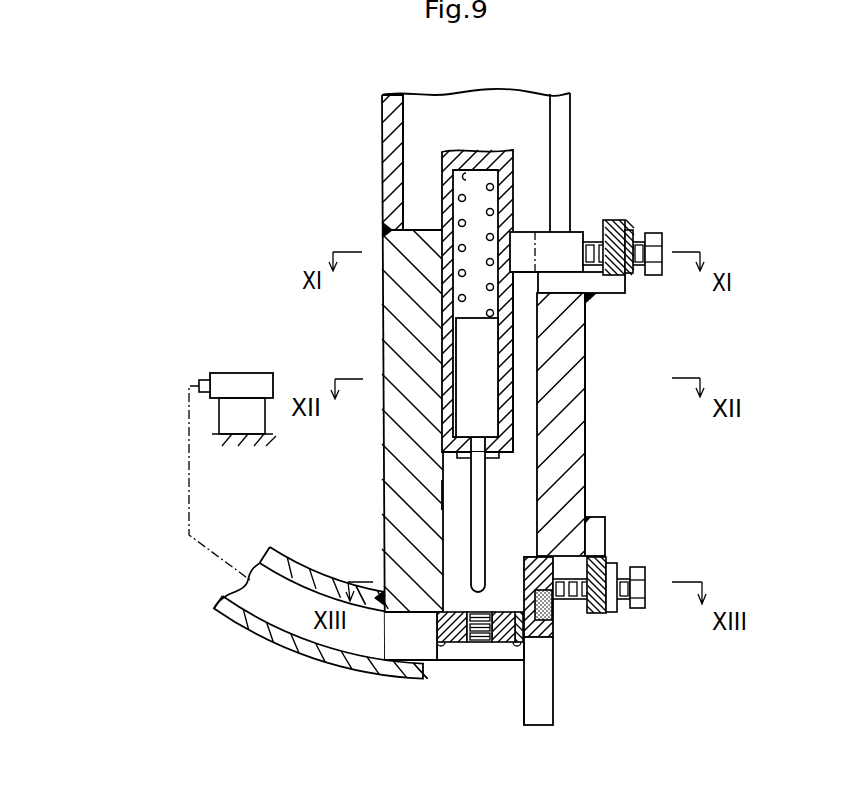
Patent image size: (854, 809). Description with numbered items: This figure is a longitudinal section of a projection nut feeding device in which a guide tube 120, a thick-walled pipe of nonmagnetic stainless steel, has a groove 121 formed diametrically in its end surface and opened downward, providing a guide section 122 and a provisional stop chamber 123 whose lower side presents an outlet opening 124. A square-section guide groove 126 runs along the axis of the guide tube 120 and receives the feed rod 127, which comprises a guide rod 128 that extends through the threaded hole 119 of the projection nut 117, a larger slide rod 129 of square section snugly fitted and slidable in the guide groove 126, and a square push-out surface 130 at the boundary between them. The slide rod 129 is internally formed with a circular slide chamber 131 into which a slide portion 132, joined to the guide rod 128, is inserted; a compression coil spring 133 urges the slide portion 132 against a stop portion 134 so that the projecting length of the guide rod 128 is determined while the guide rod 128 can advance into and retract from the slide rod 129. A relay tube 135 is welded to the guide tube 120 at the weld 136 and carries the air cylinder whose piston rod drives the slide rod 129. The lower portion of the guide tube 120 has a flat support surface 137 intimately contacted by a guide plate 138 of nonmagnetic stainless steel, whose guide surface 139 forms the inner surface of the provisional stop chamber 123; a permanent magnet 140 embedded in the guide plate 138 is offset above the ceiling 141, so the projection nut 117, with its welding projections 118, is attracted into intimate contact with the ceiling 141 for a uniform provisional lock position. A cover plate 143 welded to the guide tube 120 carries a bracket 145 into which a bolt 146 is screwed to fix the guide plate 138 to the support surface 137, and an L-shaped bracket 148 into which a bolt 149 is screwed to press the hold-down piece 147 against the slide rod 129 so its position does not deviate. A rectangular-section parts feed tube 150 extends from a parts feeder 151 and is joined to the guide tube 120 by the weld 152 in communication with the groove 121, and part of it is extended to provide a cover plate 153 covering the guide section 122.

The projection nut 117 is at (448, 645).
The welding projections 118 is at (439, 644).
The threaded hole 119 is at (472, 643).
The guide tube 120 is at (383, 509).
The groove 121 is at (393, 644).
The guide section 122 is at (381, 590).
The provisional stop chamber 123 is at (496, 650).
The outlet opening 124 is at (512, 652).
The guide groove 126 is at (446, 503).
The feed rod 127 is at (514, 357).
The guide rod 128 is at (488, 517).
The slide rod 129 is at (535, 387).
The push-out surface 130 is at (452, 468).
The slide chamber 131 is at (468, 293).
The slide portion 132 is at (463, 351).
The compression coil spring 133 is at (487, 207).
The stop portion 134 is at (585, 452).
The relay tube 135 is at (382, 148).
The weld 136 is at (383, 228).
The support surface 137 is at (535, 557).
The guide plate 138 is at (555, 713).
The guide surface 139 is at (524, 712).
The magnet 140 is at (553, 610).
The ceiling 141 is at (523, 641).
The cover plate 143 is at (586, 490).
The bracket 145 is at (606, 536).
The bolt 146 is at (643, 598).
The hold-down piece 147 is at (557, 238).
The L-shaped bracket 148 is at (612, 293).
The bolt 149 is at (652, 233).
The parts feed tube 150 is at (259, 636).
The parts feeder 151 is at (234, 363).
The weld 152 is at (348, 582).
The cover plate 153 is at (387, 668).